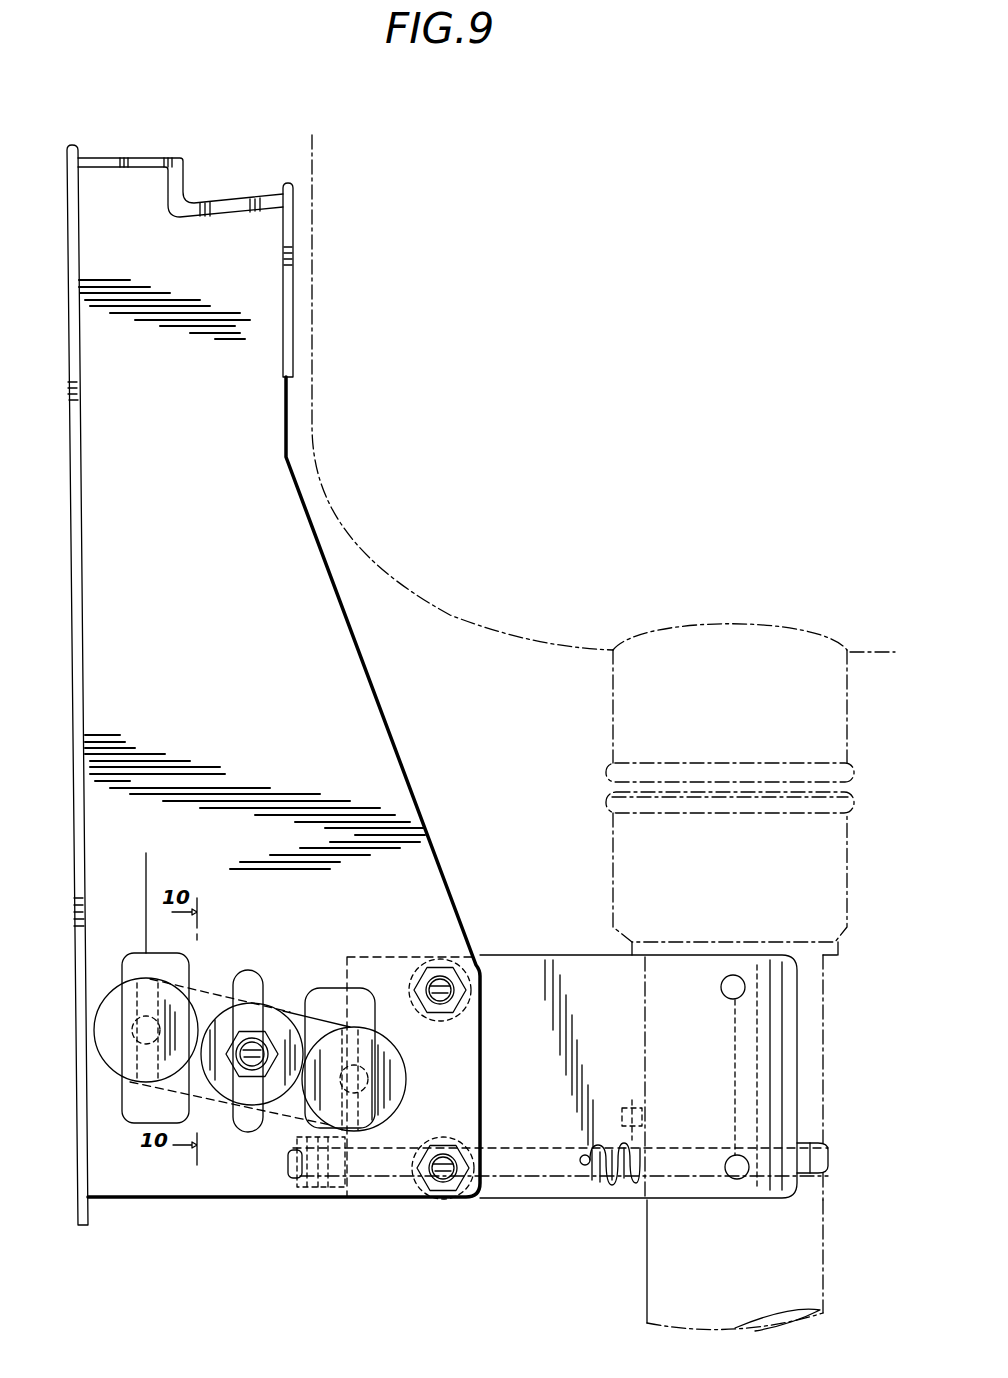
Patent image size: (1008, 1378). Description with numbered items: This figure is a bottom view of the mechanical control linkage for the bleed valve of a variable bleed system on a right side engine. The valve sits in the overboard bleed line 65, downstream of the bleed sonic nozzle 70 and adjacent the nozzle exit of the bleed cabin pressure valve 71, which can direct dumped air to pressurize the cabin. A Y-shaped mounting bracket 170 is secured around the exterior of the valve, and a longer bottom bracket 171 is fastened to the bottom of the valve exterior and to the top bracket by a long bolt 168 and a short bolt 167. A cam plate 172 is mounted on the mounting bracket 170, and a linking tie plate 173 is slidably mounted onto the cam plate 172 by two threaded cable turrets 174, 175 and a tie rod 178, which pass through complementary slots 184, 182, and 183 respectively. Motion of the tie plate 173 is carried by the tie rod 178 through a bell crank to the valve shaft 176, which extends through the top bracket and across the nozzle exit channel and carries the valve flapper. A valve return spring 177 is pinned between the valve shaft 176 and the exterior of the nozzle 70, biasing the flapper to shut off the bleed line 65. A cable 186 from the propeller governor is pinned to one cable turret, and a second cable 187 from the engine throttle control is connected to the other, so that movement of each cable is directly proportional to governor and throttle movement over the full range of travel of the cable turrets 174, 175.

The overboard bleed line 65 is at (850, 737).
The bleed sonic nozzle 70 is at (826, 1214).
The bleed cabin pressure valve 71 is at (826, 1133).
The short bolt 167 is at (458, 1146).
The long bolt 168 is at (456, 990).
The Y-shaped mounting bracket 170 is at (538, 1210).
The bottom bracket 171 is at (495, 1201).
The cam plate 172 is at (77, 906).
The linking tie plate 173 is at (187, 1092).
The threaded cable turret 174 is at (406, 1078).
The threaded cable turret 175 is at (168, 997).
The valve shaft 176 is at (540, 1148).
The valve return spring 177 is at (615, 1192).
The tie rod 178 is at (267, 1031).
The slot 182 is at (127, 958).
The slot 183 is at (238, 1134).
The slot 184 is at (372, 1007).
The cable 186 is at (146, 870).
The cable 187 is at (312, 901).